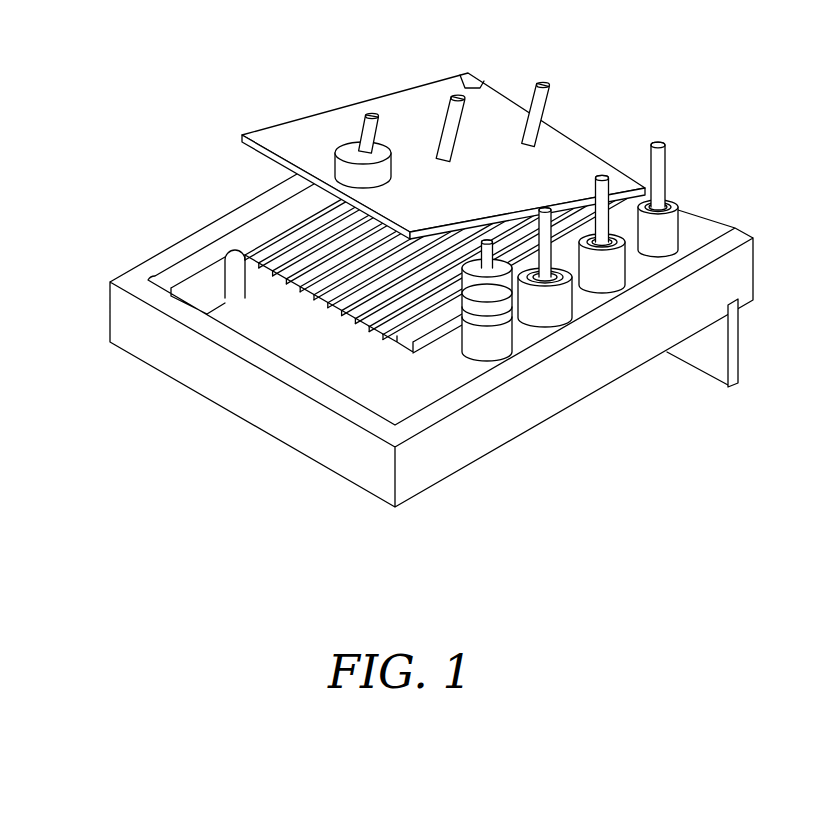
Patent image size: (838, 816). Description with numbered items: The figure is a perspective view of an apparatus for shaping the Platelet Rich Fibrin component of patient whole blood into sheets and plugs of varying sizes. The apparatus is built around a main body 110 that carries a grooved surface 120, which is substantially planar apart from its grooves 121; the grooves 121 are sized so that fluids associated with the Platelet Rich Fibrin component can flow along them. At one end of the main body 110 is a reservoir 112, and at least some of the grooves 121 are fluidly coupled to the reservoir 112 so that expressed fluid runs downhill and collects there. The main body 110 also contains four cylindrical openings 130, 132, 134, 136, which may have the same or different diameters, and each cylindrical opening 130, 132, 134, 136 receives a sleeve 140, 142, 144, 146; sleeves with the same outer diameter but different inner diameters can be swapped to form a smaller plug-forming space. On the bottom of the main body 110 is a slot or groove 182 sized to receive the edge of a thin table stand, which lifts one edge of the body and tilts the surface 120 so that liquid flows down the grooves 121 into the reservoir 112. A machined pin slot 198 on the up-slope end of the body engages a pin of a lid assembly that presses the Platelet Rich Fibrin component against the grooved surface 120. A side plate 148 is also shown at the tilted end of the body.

The main body 110 is at (405, 483).
The reservoir 112 is at (253, 322).
The grooved surface 120 is at (313, 255).
The grooves 121 is at (242, 297).
The cylindrical opening 130 is at (472, 362).
The cylindrical opening 132 is at (562, 328).
The cylindrical opening 134 is at (595, 308).
The cylindrical opening 136 is at (692, 248).
The sleeve 140 is at (492, 340).
The sleeve 142 is at (542, 310).
The sleeve 144 is at (615, 265).
The sleeve 146 is at (667, 222).
The side plate 148 is at (720, 367).
The slot or groove 182 is at (738, 305).
The machined pin slot 198 is at (487, 92).